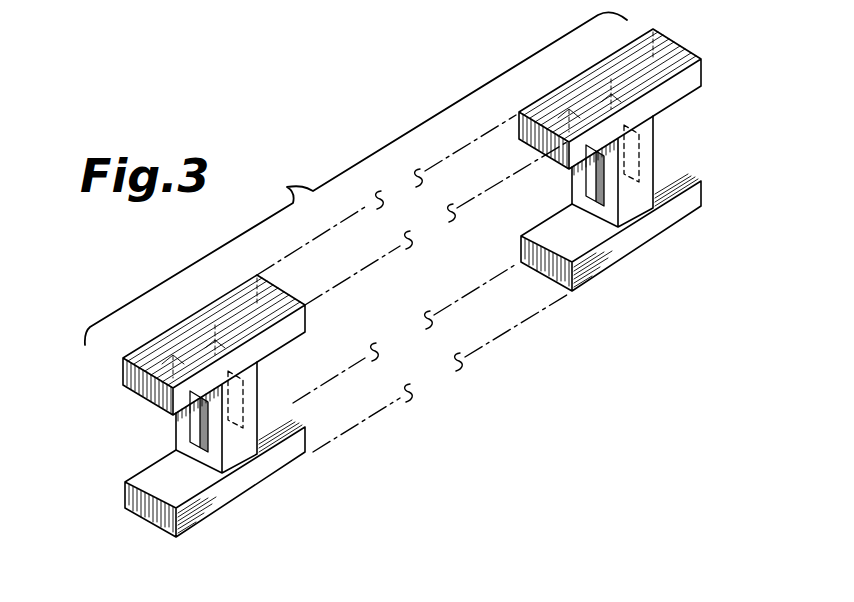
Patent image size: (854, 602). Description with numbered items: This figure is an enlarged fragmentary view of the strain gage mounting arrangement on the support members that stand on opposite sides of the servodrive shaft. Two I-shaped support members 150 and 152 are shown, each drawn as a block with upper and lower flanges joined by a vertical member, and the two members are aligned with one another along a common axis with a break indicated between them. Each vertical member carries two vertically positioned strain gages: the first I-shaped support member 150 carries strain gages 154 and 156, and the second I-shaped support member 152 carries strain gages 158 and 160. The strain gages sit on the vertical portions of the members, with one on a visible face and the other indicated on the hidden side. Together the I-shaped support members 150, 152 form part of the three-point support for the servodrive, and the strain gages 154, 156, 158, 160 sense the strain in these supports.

The I-shaped support member 150 is at (243, 487).
The I-shaped support member 152 is at (643, 237).
The strain gage 154 is at (198, 427).
The strain gage 156 is at (260, 400).
The strain gage 158 is at (597, 200).
The strain gage 160 is at (633, 167).